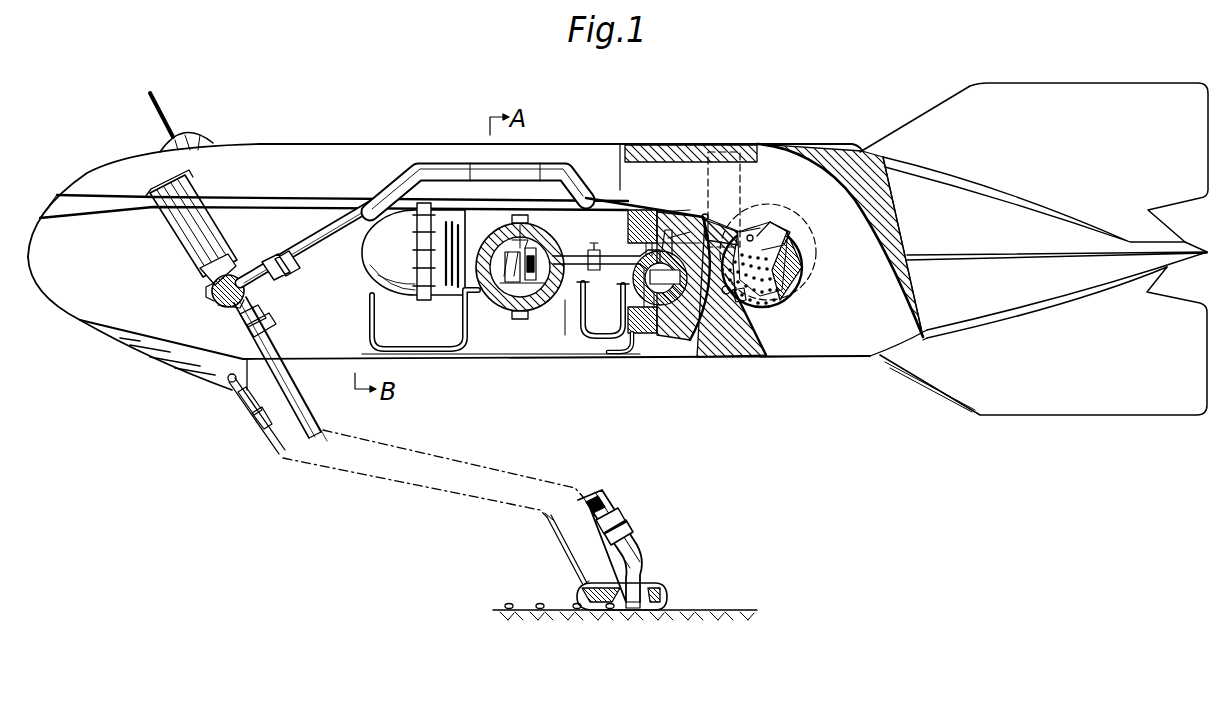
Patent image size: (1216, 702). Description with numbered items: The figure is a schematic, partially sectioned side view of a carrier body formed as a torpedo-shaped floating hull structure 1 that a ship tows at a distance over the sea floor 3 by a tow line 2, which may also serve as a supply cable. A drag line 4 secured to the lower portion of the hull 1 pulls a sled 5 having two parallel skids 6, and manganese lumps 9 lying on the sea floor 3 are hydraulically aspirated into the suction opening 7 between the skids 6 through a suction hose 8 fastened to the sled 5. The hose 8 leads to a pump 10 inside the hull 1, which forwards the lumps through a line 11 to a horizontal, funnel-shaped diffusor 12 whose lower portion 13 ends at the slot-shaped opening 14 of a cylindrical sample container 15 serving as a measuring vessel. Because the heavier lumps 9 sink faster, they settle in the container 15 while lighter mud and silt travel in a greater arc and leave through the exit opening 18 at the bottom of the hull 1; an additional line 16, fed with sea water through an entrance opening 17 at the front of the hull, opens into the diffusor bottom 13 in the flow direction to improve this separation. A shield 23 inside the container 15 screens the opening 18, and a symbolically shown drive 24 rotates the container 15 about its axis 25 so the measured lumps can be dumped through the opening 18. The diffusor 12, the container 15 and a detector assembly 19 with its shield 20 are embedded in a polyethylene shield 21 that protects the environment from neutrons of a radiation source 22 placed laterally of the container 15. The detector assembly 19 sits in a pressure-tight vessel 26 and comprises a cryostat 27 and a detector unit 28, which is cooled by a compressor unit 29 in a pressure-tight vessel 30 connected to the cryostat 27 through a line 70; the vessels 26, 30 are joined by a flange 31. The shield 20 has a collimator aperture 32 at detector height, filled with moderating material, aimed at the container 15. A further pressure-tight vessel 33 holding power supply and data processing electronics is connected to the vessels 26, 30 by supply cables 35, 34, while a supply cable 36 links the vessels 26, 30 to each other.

The floating hull structure 1 is at (294, 157).
The tow line 2 is at (165, 106).
The sea floor 3 is at (686, 616).
The drag line 4 is at (278, 462).
The sled 5 is at (668, 585).
The skids 6 is at (668, 597).
The suction opening 7 is at (637, 612).
The suction hose 8 is at (310, 410).
The manganese lumps 9 is at (540, 603).
The pump 10 is at (222, 252).
The line 11 is at (338, 238).
The diffusor 12 is at (670, 160).
The lower portion of the diffusor 13 is at (692, 214).
The opening of the sample container 14 is at (748, 232).
The sample container 15 is at (778, 232).
The additional line 16 is at (570, 206).
The entrance opening 17 is at (45, 215).
The exit opening 18 is at (808, 359).
The detector assembly 19 is at (680, 340).
The shield 20 is at (650, 212).
The shield 21 is at (838, 162).
The radiation source 22 is at (752, 310).
The shield 23 is at (800, 278).
The drive 24 is at (745, 160).
The axis 25 is at (795, 262).
The pressure-tight vessel 26 is at (622, 306).
The cryostat 27 is at (628, 228).
The detector unit 28 is at (617, 170).
The compressor unit 29 is at (508, 296).
The pressure-tight vessel 30 is at (552, 296).
The flange 31 is at (583, 340).
The collimator aperture 32 is at (728, 300).
The pressure-tight vessel 33 is at (398, 295).
The supply cable 34 is at (462, 325).
The supply cable 35 is at (512, 358).
The supply cable 36 is at (618, 354).
The line 70 is at (592, 250).